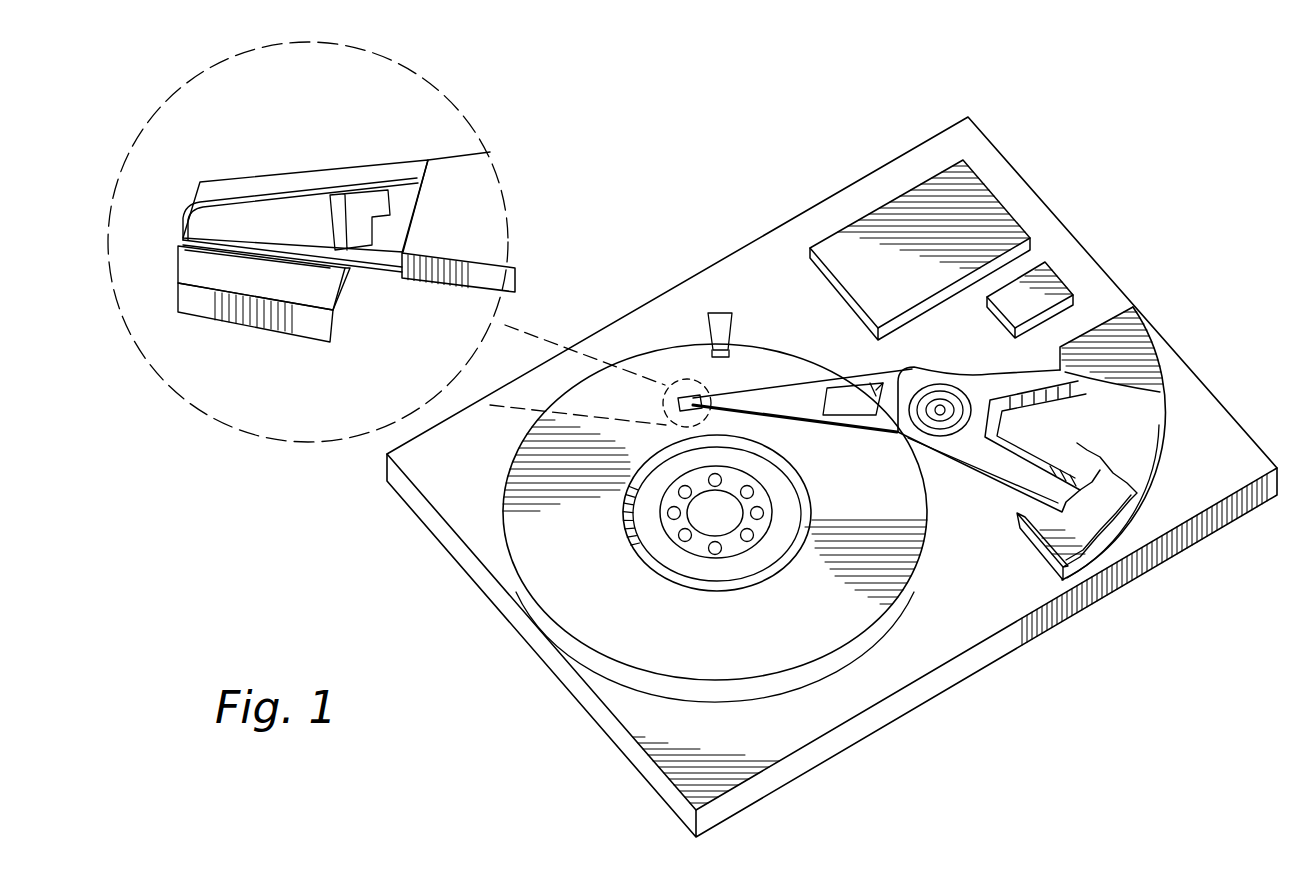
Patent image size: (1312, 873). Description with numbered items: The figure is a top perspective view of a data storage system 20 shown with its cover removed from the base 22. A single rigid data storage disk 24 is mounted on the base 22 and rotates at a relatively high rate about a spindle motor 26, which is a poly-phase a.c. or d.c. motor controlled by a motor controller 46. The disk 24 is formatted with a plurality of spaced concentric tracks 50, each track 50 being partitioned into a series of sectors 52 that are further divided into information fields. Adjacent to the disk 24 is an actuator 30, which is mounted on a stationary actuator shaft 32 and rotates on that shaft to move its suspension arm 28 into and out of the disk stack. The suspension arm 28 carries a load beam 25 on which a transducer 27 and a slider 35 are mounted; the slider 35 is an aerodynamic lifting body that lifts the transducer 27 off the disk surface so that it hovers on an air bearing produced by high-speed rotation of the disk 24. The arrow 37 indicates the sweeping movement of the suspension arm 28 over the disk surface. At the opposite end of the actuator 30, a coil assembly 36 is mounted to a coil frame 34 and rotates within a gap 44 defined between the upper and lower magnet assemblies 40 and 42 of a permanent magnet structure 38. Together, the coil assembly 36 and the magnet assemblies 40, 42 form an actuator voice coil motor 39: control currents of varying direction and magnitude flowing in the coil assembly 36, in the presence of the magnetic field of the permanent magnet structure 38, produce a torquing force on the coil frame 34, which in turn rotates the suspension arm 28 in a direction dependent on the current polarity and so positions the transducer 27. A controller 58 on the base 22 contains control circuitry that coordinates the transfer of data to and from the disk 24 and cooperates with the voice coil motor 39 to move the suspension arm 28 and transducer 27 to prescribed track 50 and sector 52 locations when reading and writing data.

The data storage system 20 is at (1150, 212).
The base 22 is at (797, 218).
The data storage disk 24 is at (714, 673).
The load beam 25 is at (291, 222).
The spindle motor 26 is at (735, 545).
The transducer 27 is at (178, 280).
The suspension arm 28 is at (800, 418).
The actuator 30 is at (952, 447).
The actuator shaft 32 is at (940, 405).
The coil frame 34 is at (999, 422).
The slider 35 is at (439, 242).
The coil assembly 36 is at (1010, 420).
The arm movement direction 37 is at (935, 453).
The permanent magnet structure 38 is at (1150, 345).
The actuator voice coil motor 39 is at (1003, 508).
The upper magnet assembly 40 is at (1147, 442).
The lower magnet assembly 42 is at (1050, 545).
The gap 44 is at (1118, 495).
The motor controller 46 is at (858, 282).
The track 50 is at (689, 524).
The sector 52 is at (628, 540).
The controller 58 is at (1015, 303).